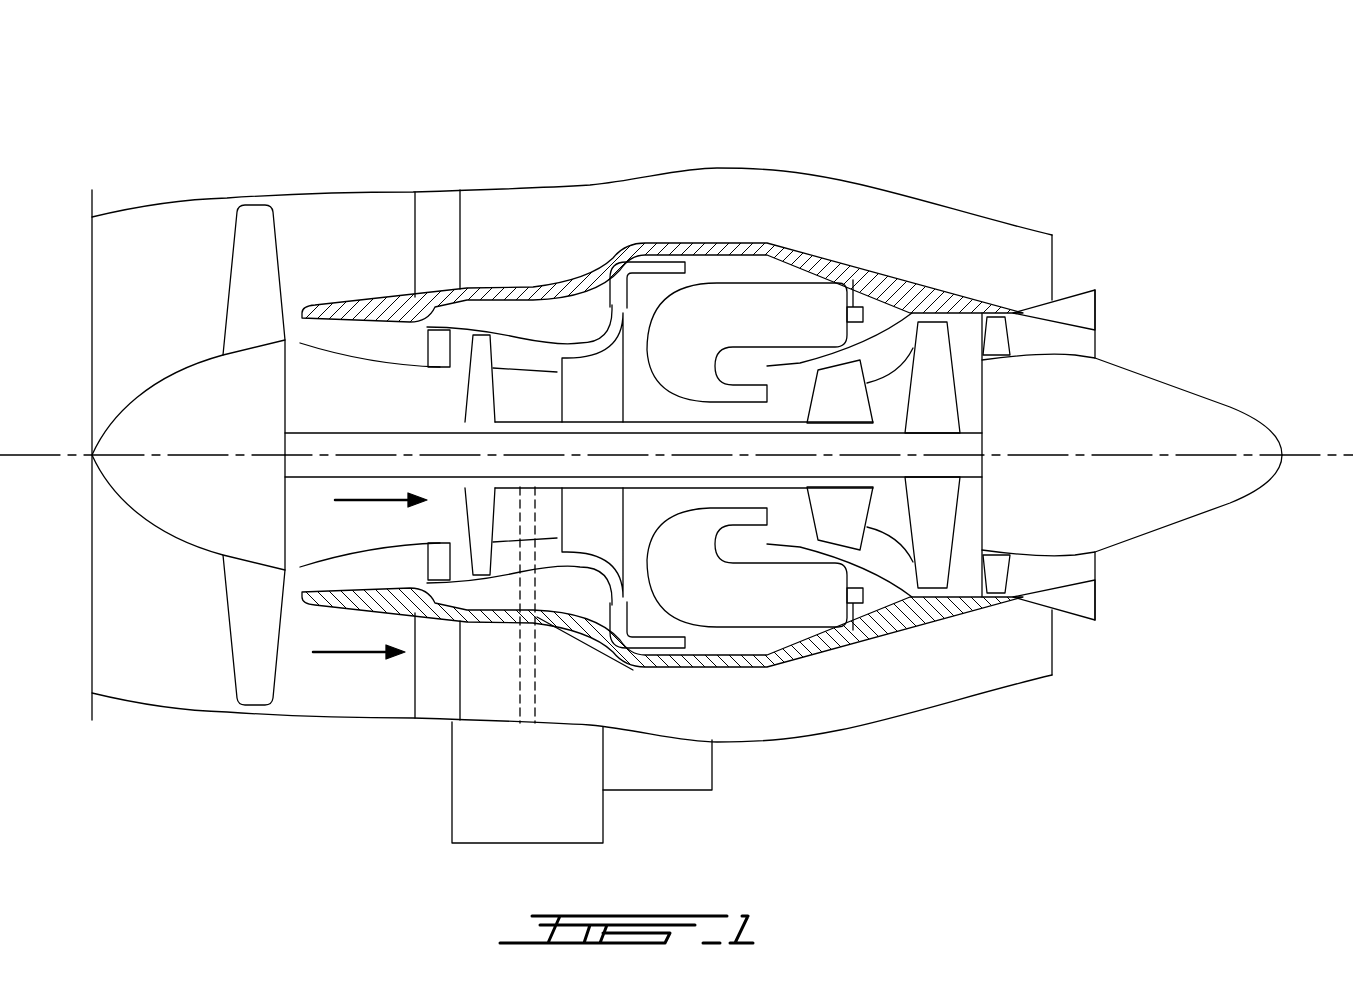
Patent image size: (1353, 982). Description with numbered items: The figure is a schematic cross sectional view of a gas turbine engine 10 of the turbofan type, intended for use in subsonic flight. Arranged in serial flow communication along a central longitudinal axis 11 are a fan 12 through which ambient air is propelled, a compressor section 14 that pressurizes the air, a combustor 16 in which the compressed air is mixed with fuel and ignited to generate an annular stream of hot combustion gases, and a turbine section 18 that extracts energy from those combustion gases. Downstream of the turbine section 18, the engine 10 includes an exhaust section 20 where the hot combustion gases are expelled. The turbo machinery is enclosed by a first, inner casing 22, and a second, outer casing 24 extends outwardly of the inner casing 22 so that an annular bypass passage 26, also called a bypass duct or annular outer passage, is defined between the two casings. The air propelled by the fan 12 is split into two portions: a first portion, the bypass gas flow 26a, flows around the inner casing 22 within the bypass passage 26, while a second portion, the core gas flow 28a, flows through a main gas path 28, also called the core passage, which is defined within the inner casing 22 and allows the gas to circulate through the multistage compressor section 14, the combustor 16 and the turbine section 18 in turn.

The gas turbine engine 10 is at (864, 158).
The central longitudinal axis 11 is at (1320, 455).
The fan 12 is at (248, 618).
The compressor section 14 is at (520, 345).
The combustor 16 is at (750, 305).
The turbine section 18 is at (888, 527).
The exhaust section 20 is at (1063, 592).
The first, inner casing 22 is at (750, 673).
The second, outer casing 24 is at (338, 713).
The annular bypass passage 26 is at (824, 700).
The bypass gas flow 26a is at (360, 655).
The main gas path 28 is at (316, 542).
The core gas flow 28a is at (377, 495).